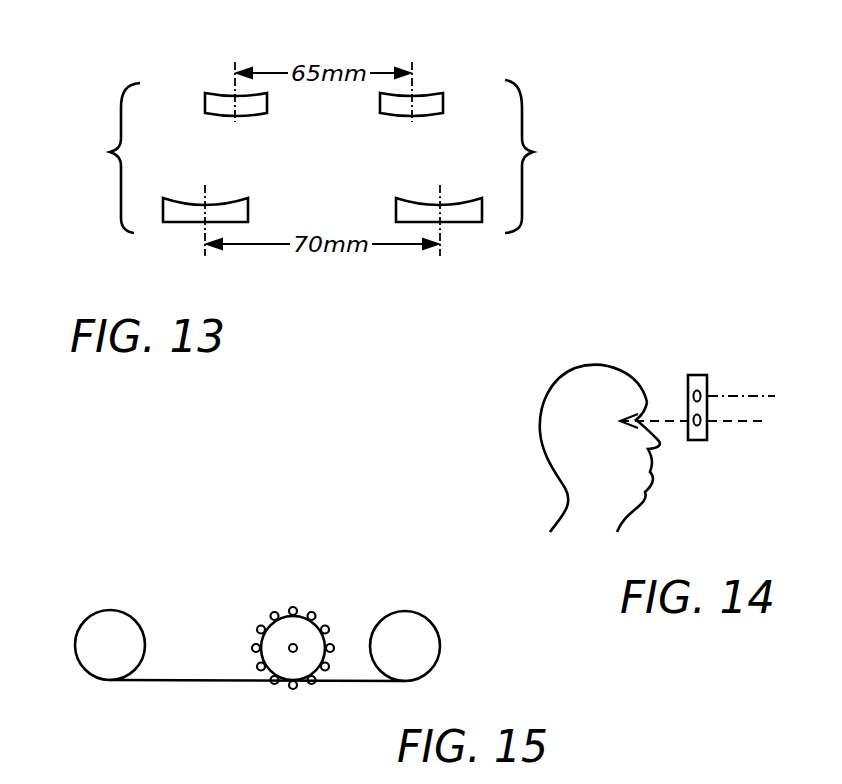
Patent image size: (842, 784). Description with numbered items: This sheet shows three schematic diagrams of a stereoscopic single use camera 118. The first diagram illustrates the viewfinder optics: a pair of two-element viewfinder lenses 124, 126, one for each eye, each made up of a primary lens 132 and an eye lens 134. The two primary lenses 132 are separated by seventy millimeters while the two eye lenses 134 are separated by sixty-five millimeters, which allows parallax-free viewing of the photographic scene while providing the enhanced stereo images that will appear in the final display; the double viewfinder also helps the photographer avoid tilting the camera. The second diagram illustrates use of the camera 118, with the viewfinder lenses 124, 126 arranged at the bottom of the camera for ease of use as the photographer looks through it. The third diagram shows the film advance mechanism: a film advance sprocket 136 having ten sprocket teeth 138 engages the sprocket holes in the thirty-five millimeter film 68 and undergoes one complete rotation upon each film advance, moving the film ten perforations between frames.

In FIG. 13, the viewfinder lens 124 is at (110, 152).
In FIG. 13, the viewfinder lens 126 is at (533, 152).
In FIG. 13, the primary lens 132 is at (173, 223).
In FIG. 13, the eye lens 134 is at (218, 92).
In FIG. 14, the single use camera 118 is at (700, 366).
In FIG. 15, the film advance sprocket 136 is at (273, 632).
In FIG. 15, the sprocket teeth 138 is at (290, 612).
In FIG. 15, the 35 mm film 68 is at (200, 683).